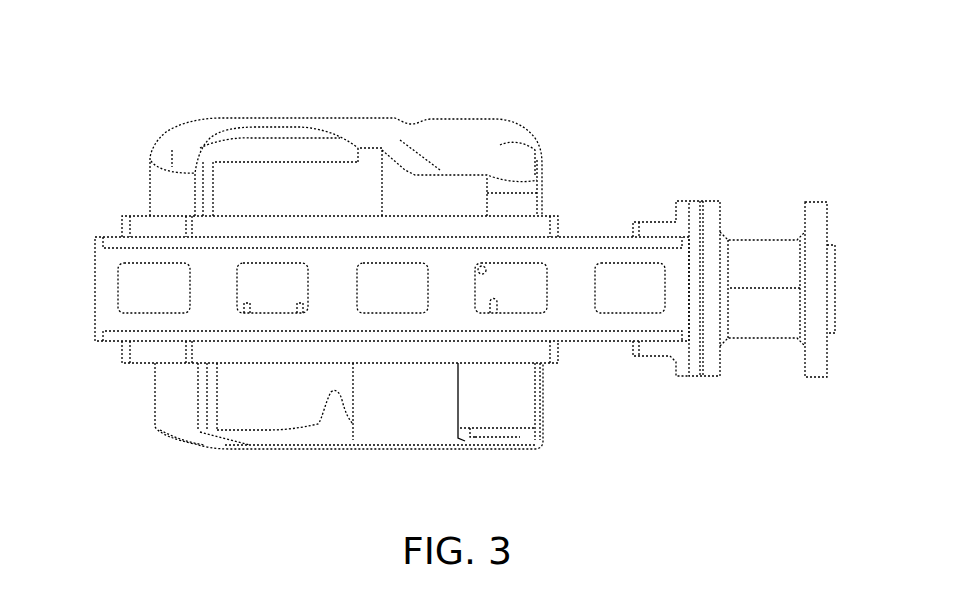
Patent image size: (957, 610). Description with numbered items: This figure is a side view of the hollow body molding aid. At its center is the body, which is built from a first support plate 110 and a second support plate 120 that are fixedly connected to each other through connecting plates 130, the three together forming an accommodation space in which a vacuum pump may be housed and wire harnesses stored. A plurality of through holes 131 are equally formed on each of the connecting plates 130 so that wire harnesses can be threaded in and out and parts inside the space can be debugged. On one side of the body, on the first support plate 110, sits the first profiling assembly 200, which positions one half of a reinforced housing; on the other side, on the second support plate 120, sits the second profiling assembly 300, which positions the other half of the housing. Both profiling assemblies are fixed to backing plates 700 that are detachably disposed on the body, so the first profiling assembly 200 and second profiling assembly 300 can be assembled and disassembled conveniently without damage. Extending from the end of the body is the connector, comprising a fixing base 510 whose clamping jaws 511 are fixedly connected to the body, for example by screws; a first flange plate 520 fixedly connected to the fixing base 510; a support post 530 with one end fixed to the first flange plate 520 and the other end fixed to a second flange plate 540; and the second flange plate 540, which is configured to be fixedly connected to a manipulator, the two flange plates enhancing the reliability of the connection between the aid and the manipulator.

The first support plate 110 is at (575, 243).
The second support plate 120 is at (115, 340).
The connecting plates 130 is at (585, 307).
The through holes 131 is at (640, 287).
The first profiling assembly 200 is at (418, 124).
The second profiling assembly 300 is at (335, 435).
The fixing base 510 is at (697, 228).
The clamping jaws 511 is at (645, 228).
The first flange plate 520 is at (710, 367).
The support post 530 is at (747, 253).
The second flange plate 540 is at (817, 237).
The backing plates 700 is at (147, 228).